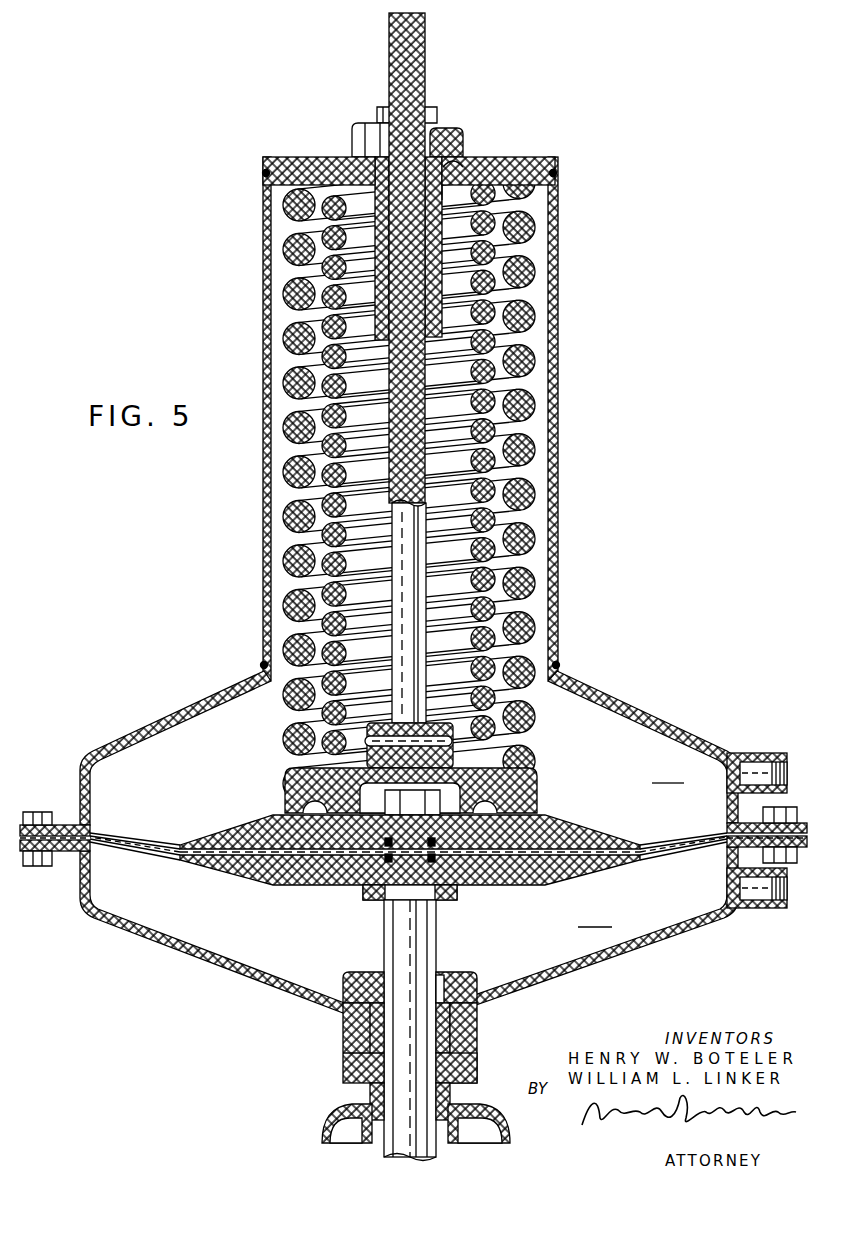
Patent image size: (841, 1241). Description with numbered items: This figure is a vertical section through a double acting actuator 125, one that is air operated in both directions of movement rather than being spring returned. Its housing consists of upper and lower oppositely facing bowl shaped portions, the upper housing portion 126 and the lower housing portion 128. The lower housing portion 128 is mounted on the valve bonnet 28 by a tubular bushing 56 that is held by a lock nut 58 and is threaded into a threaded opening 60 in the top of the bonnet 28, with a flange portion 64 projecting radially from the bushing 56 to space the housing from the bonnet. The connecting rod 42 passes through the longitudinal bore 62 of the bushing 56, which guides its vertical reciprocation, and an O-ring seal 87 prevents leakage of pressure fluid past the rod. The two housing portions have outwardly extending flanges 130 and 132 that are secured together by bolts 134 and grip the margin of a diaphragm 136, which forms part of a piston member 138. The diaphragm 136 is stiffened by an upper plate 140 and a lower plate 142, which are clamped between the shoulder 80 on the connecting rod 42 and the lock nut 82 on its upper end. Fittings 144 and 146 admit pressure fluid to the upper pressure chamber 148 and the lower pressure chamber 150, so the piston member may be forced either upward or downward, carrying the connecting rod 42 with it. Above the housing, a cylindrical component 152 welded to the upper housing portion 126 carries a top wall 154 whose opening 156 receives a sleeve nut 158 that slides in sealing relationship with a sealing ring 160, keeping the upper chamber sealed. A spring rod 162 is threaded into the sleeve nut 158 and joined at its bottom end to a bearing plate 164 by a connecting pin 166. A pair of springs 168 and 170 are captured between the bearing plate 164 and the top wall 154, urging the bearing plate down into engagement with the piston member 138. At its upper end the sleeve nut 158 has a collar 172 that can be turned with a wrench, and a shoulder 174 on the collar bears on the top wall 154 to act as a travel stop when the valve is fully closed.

The collar 172 is at (455, 128).
The shoulder 174 is at (462, 152).
The sealing ring 160 is at (465, 165).
The top wall 154 is at (537, 158).
The opening 156 is at (460, 194).
The cylindrical component 152 is at (558, 377).
The sleeve nut 158 is at (439, 350).
The spring 170 is at (490, 432).
The spring 168 is at (535, 455).
The actuator 125 is at (451, 418).
The spring rod 162 is at (420, 540).
The connecting pin 166 is at (430, 737).
The bearing plate 164 is at (530, 795).
The upper pressure chamber 148 is at (669, 772).
The fitting 144 is at (752, 753).
The bolts 134 is at (32, 812).
The flange 130 is at (62, 825).
The flange 132 is at (62, 852).
The diaphragm 136 is at (105, 860).
The lower plate 142 is at (218, 872).
The upper plate 140 is at (240, 828).
The lock nut 82 is at (385, 802).
The piston member 138 is at (246, 892).
The shoulder 80 is at (380, 900).
The connecting rod 42 is at (430, 916).
The lower pressure chamber 150 is at (595, 916).
The fitting 146 is at (760, 908).
The lower housing portion 128 is at (172, 957).
The upper housing portion 126 is at (157, 718).
The longitudinal bore 62 is at (387, 982).
The bushing 56 is at (440, 978).
The lock nut 58 is at (470, 985).
The O-ring seal 87 is at (436, 987).
The flange portion 64 is at (470, 1066).
The threaded opening 60 is at (370, 1127).
The bonnet 28 is at (500, 1120).